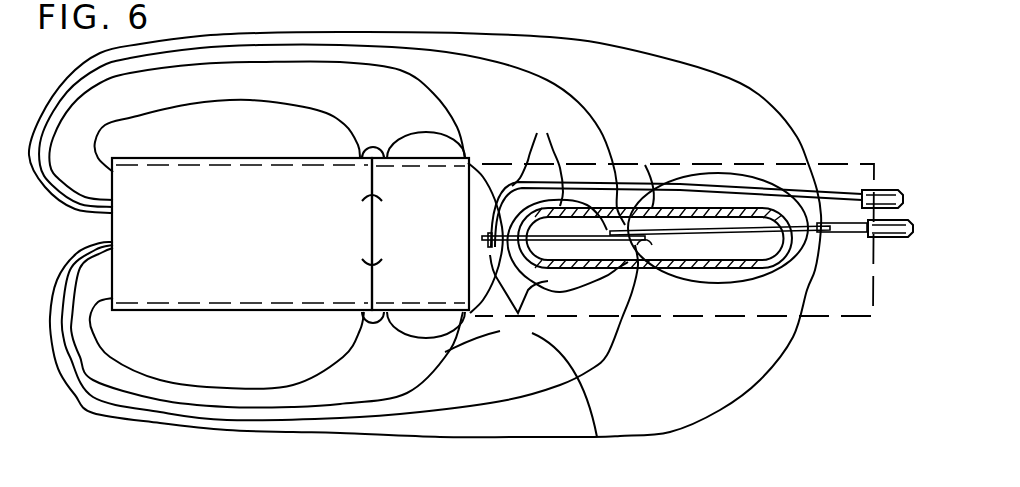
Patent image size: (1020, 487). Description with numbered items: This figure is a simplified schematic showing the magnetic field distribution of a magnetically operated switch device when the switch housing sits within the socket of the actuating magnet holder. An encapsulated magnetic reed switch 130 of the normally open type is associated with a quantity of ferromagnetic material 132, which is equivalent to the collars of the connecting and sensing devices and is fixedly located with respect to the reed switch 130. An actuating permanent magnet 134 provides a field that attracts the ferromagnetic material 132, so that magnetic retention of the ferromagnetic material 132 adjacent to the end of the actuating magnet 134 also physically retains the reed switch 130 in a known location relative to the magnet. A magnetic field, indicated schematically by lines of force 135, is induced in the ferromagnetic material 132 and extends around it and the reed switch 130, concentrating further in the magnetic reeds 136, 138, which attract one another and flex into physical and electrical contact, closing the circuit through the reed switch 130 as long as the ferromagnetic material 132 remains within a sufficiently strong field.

The encapsulated magnetic reed switch 130 is at (652, 266).
The ferromagnetic material 132 is at (415, 312).
The actuating permanent magnet 134 is at (238, 298).
The lines of force 135 is at (591, 98).
The magnetic reed 136 is at (588, 268).
The magnetic reed 138 is at (738, 240).